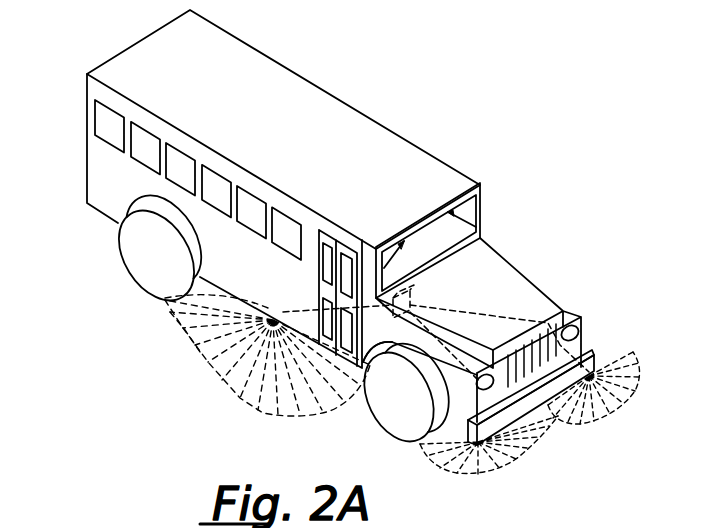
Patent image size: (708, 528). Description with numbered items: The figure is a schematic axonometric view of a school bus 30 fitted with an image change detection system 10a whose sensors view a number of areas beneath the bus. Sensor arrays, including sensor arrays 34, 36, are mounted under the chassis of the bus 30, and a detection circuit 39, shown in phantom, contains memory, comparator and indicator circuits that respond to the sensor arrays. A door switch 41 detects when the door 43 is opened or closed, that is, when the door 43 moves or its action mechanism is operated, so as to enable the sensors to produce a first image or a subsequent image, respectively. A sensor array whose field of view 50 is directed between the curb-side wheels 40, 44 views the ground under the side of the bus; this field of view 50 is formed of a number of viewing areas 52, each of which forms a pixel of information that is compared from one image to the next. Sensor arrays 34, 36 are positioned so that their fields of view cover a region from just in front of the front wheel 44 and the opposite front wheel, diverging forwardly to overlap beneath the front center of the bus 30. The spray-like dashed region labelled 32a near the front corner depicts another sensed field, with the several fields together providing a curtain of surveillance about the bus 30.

The image change detection system 10a is at (357, 64).
The school bus 30 is at (89, 138).
The door 43 is at (318, 297).
The curb-side wheel 40 is at (150, 272).
The curb-side wheel 44 is at (400, 412).
The door switch 41 is at (384, 372).
The detection circuit 39 is at (414, 296).
The sensor array 36 is at (598, 353).
The sensor array 34 is at (480, 443).
The spray pattern 32a is at (613, 515).
The viewing area 52 is at (272, 421).
The field of view 50 is at (207, 355).